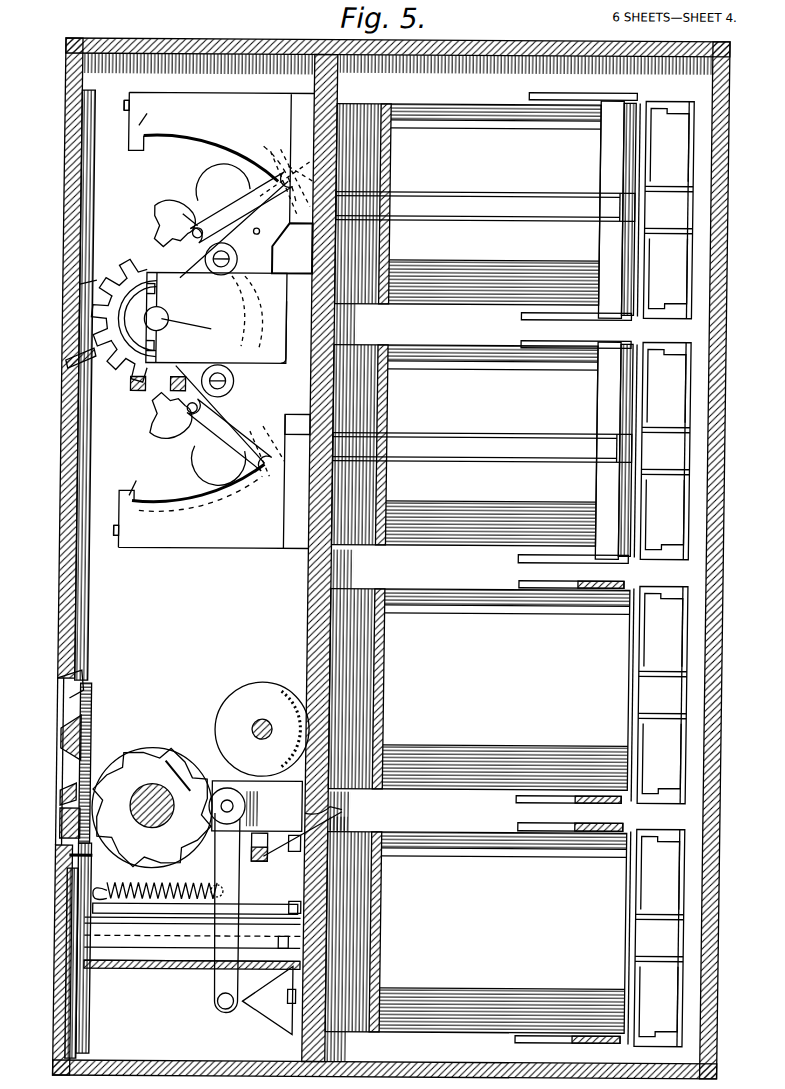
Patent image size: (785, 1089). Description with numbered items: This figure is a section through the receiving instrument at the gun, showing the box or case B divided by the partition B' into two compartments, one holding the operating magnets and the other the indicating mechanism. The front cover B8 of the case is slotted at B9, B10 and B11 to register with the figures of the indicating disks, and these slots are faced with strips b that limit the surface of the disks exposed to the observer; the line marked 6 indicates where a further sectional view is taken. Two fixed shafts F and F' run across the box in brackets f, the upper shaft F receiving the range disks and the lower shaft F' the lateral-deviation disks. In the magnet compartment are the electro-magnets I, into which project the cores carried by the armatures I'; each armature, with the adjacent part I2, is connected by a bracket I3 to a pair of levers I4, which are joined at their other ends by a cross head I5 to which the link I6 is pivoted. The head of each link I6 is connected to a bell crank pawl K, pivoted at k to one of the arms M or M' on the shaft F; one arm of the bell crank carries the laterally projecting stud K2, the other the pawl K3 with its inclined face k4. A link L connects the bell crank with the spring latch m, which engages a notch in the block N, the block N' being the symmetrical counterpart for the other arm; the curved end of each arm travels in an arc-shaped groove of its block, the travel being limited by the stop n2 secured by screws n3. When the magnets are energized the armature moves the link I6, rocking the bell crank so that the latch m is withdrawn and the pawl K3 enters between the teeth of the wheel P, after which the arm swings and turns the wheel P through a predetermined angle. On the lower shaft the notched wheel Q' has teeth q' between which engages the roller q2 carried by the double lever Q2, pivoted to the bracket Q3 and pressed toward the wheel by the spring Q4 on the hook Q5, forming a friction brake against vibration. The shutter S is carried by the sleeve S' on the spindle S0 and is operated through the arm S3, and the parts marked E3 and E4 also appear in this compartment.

The box or case B is at (401, 558).
The partition B' is at (313, 557).
The front cover B8 is at (68, 224).
The slot B9 is at (66, 320).
The slot B10 is at (66, 682).
The slot B11 is at (70, 818).
The strips b is at (70, 362).
The pin 6 is at (83, 284).
The block N is at (219, 157).
The lower segment plate N' is at (211, 480).
The stop n2 is at (154, 294).
The screws n3 is at (126, 108).
The spring latch m is at (292, 420).
The bell crank pawl K is at (185, 212).
The laterally projecting stud K2 is at (232, 196).
The pawl K3 is at (160, 215).
The inclined face k4 is at (165, 227).
The roller k is at (232, 256).
The link L is at (183, 325).
The wheel E3 is at (268, 690).
The rod E4 is at (330, 813).
The arm M is at (216, 317).
The arm M' is at (263, 332).
The brackets f is at (165, 312).
The upper fixed shaft F is at (194, 329).
The toothed wheel P is at (128, 284).
The shutter S is at (188, 865).
The sleeve S' is at (41, 963).
The arm S3 is at (88, 858).
The spindle S0 is at (192, 936).
The notched wheel Q' is at (152, 780).
The lower fixed shaft F' is at (139, 767).
The ratchet pawl q' is at (178, 756).
The roller q2 is at (250, 812).
The double lever Q2 is at (236, 862).
The bracket Q3 is at (262, 1008).
The spring Q4 is at (185, 900).
The hook Q5 is at (150, 905).
The electro-magnets I is at (480, 569).
The armature I' is at (667, 573).
The lower compartment I2 is at (666, 222).
The bracket I3 is at (688, 152).
The levers I4 is at (606, 91).
The cross head I5 is at (602, 176).
The link I6 is at (452, 198).